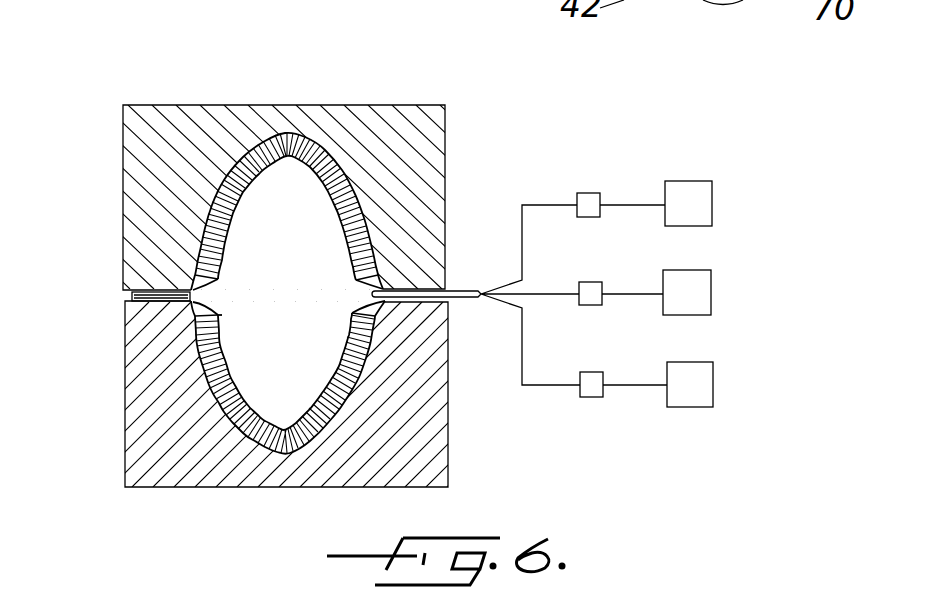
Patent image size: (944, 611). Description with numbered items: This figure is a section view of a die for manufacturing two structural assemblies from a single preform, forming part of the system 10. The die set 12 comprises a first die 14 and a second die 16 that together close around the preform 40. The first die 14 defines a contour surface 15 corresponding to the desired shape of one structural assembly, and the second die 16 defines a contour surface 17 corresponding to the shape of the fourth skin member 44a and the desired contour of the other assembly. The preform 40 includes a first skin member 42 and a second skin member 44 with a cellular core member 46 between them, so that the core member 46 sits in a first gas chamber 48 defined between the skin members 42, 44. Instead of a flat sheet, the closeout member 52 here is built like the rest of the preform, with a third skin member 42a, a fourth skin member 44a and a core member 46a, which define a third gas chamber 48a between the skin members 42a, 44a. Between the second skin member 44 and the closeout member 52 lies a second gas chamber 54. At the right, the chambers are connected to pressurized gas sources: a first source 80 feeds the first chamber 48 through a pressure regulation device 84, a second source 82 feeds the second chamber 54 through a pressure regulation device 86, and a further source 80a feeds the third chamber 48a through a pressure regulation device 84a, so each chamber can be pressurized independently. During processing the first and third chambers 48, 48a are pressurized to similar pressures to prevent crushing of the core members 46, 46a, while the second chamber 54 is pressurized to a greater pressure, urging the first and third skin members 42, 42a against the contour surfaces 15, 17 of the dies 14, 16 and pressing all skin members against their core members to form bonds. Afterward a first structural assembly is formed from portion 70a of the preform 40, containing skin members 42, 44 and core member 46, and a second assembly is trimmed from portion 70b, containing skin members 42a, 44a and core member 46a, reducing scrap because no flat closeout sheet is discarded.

The system 10 is at (484, 98).
The die set 12 is at (106, 353).
The first die 14 is at (153, 478).
The contour surface 15 is at (348, 401).
The second die 16 is at (145, 107).
The contour surface 17 is at (330, 152).
The preform 40 is at (208, 412).
The first skin member 42 is at (237, 430).
The third skin member 42a is at (229, 167).
The second skin member 44 is at (268, 428).
The fourth skin member 44a is at (258, 172).
The core member 46 is at (283, 432).
The core member 46a is at (300, 133).
The first gas chamber 48 is at (333, 413).
The third gas chamber 48a is at (362, 205).
The closeout member 52 is at (208, 180).
The second gas chamber 54 is at (323, 329).
The portion of the preform 70a is at (236, 360).
The portion of the preform 70b is at (247, 218).
The first pressurized gas source 80 is at (698, 387).
The pressurized gas source 80a is at (705, 197).
The second pressurized gas source 82 is at (705, 295).
The pressure regulation device 84 is at (595, 377).
The pressure regulation device 84a is at (592, 193).
The pressure regulation device 86 is at (592, 288).